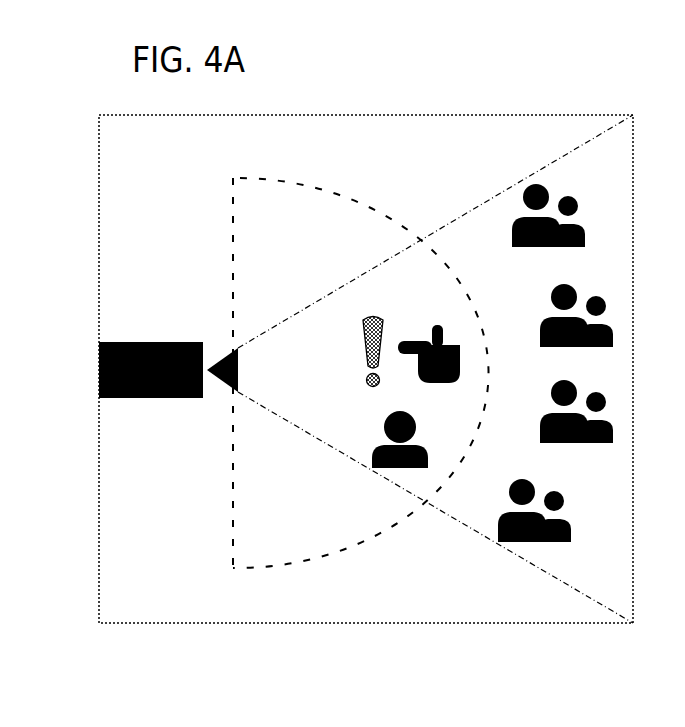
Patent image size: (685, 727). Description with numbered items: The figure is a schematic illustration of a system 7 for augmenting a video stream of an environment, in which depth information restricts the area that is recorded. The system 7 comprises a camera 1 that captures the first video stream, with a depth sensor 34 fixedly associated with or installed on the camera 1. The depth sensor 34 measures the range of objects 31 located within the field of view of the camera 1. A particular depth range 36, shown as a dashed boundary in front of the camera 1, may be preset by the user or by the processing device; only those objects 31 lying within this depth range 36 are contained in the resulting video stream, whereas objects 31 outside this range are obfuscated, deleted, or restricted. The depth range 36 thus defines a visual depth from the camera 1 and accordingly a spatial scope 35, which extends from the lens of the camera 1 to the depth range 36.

The system 7 is at (158, 246).
The camera 1 is at (151, 349).
The depth sensor 34 is at (222, 356).
The spatial scope 35 is at (450, 277).
The depth range 36 is at (465, 295).
The objects 31 is at (405, 356).